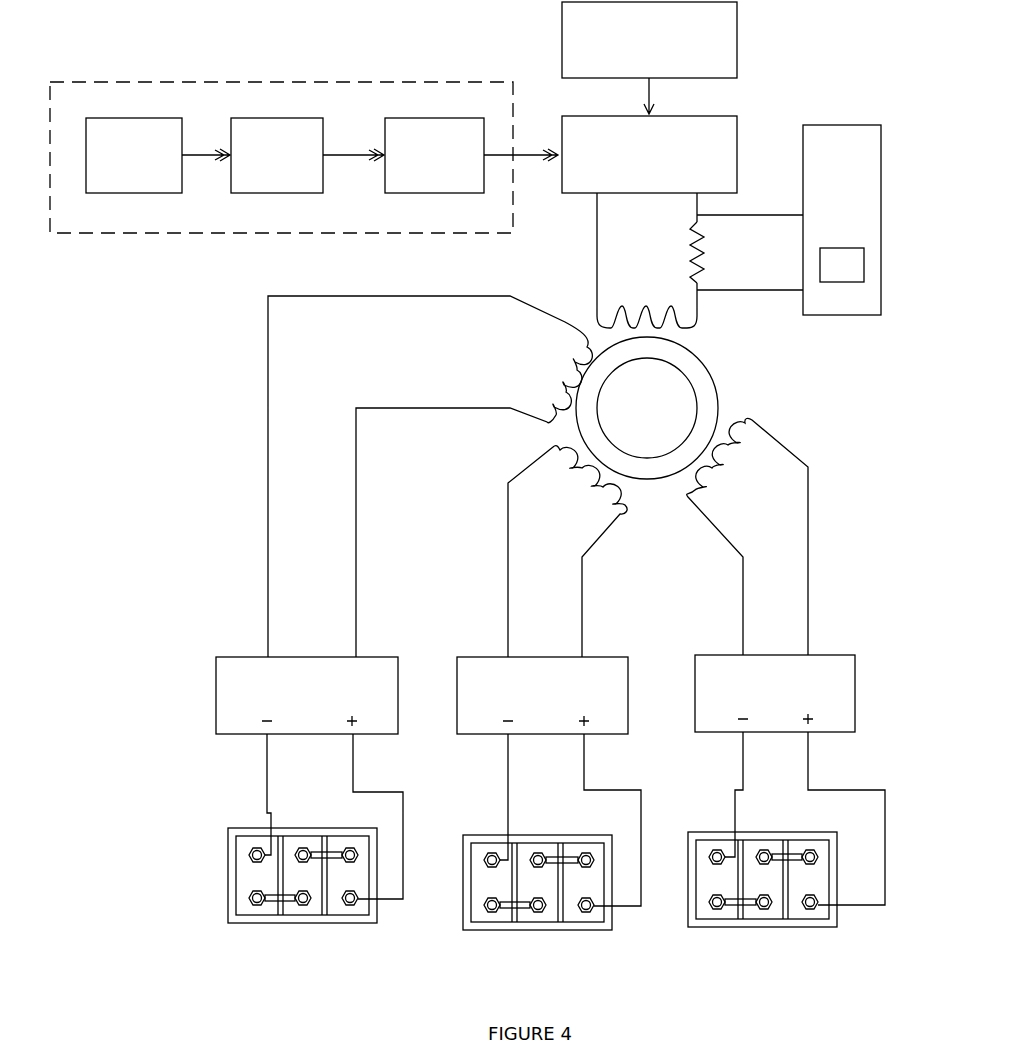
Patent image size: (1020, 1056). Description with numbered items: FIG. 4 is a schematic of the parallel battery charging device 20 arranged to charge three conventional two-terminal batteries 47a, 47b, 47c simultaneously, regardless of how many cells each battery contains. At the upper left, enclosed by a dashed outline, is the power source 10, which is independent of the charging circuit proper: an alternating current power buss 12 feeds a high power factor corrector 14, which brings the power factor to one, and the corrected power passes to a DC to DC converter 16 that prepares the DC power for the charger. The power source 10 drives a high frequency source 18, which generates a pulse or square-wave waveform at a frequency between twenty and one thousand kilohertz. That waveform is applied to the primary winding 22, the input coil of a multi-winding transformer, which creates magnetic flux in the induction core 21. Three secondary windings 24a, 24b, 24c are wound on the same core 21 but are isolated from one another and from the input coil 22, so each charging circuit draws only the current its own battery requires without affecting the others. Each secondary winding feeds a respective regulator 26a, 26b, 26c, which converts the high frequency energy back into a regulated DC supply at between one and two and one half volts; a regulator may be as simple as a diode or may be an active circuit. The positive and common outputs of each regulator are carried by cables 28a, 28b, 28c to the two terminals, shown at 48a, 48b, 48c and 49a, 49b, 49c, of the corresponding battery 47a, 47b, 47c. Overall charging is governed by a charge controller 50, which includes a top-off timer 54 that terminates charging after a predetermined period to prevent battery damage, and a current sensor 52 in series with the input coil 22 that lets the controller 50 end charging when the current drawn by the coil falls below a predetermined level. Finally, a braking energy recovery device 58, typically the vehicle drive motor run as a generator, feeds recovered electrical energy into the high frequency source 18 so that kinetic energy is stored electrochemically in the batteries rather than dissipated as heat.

The power source 10 is at (178, 248).
The power buss 12 is at (100, 118).
The high power factor corrector 14 is at (245, 118).
The DC to DC converter 16 is at (444, 118).
The high frequency source 18 is at (737, 140).
The parallel battery charging device 20 is at (735, 401).
The induction core 21 is at (712, 381).
The primary winding 22 is at (597, 275).
The secondary winding 24a is at (548, 408).
The secondary winding 24b is at (596, 505).
The secondary winding 24c is at (710, 481).
The regulator 26a is at (370, 657).
The regulator 26b is at (612, 657).
The regulator 26c is at (830, 655).
The cable 28a is at (267, 780).
The cable 28b is at (508, 777).
The cable 28c is at (743, 775).
The conventional two-terminal battery 47a is at (282, 940).
The conventional two-terminal battery 47b is at (519, 942).
The conventional two-terminal battery 47c is at (740, 940).
The battery terminal a 48a is at (352, 914).
The battery terminal b 48b is at (471, 847).
The battery terminal c 48c is at (814, 924).
The battery terminal a 49a is at (238, 843).
The battery terminal b 49b is at (591, 923).
The battery terminal c 49c is at (703, 846).
The charge controller 50 is at (843, 108).
The current sensor 52 is at (700, 262).
The top-off timer 54 is at (848, 282).
The braking energy recovery device 58 is at (737, 33).